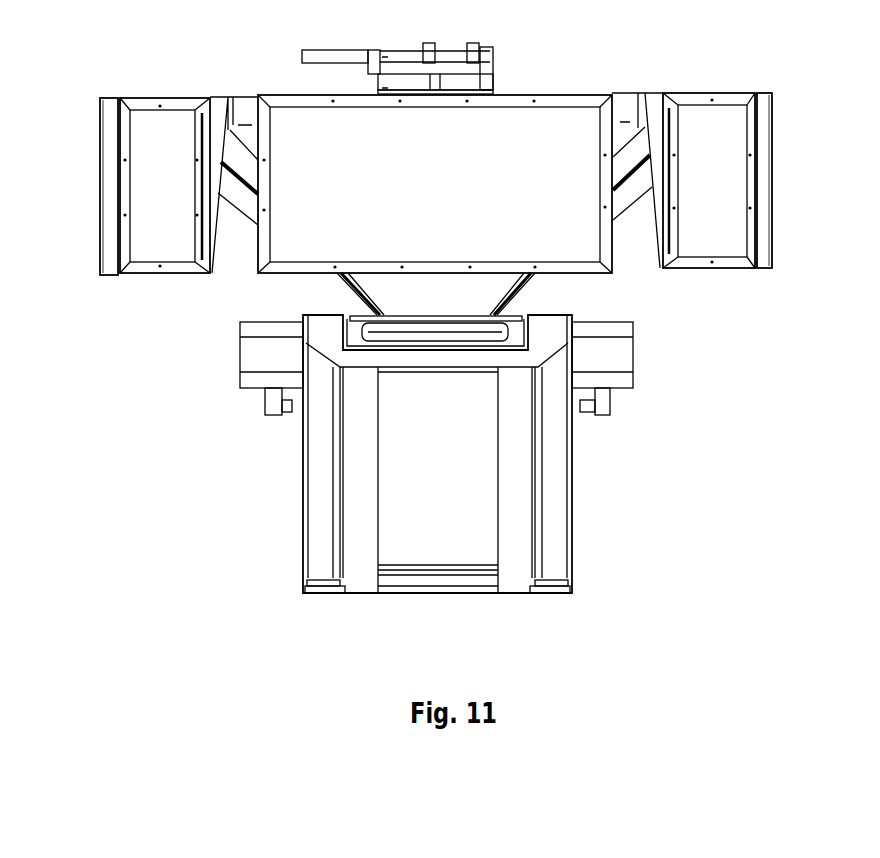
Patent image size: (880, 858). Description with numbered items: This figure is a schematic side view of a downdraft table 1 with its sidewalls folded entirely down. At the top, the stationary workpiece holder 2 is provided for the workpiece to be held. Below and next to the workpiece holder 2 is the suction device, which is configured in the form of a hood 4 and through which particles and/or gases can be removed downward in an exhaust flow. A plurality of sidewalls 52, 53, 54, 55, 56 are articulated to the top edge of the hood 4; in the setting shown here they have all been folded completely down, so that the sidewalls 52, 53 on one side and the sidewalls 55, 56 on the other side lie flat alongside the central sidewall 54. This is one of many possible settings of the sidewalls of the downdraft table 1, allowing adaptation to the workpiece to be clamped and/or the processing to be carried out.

The downdraft table 1 is at (145, 498).
The workpiece holder 2 is at (495, 57).
The hood 4 is at (633, 193).
The sidewall 52 is at (772, 225).
The sidewall 53 is at (722, 240).
The sidewall 54 is at (290, 240).
The sidewall 55 is at (153, 255).
The sidewall 56 is at (107, 212).